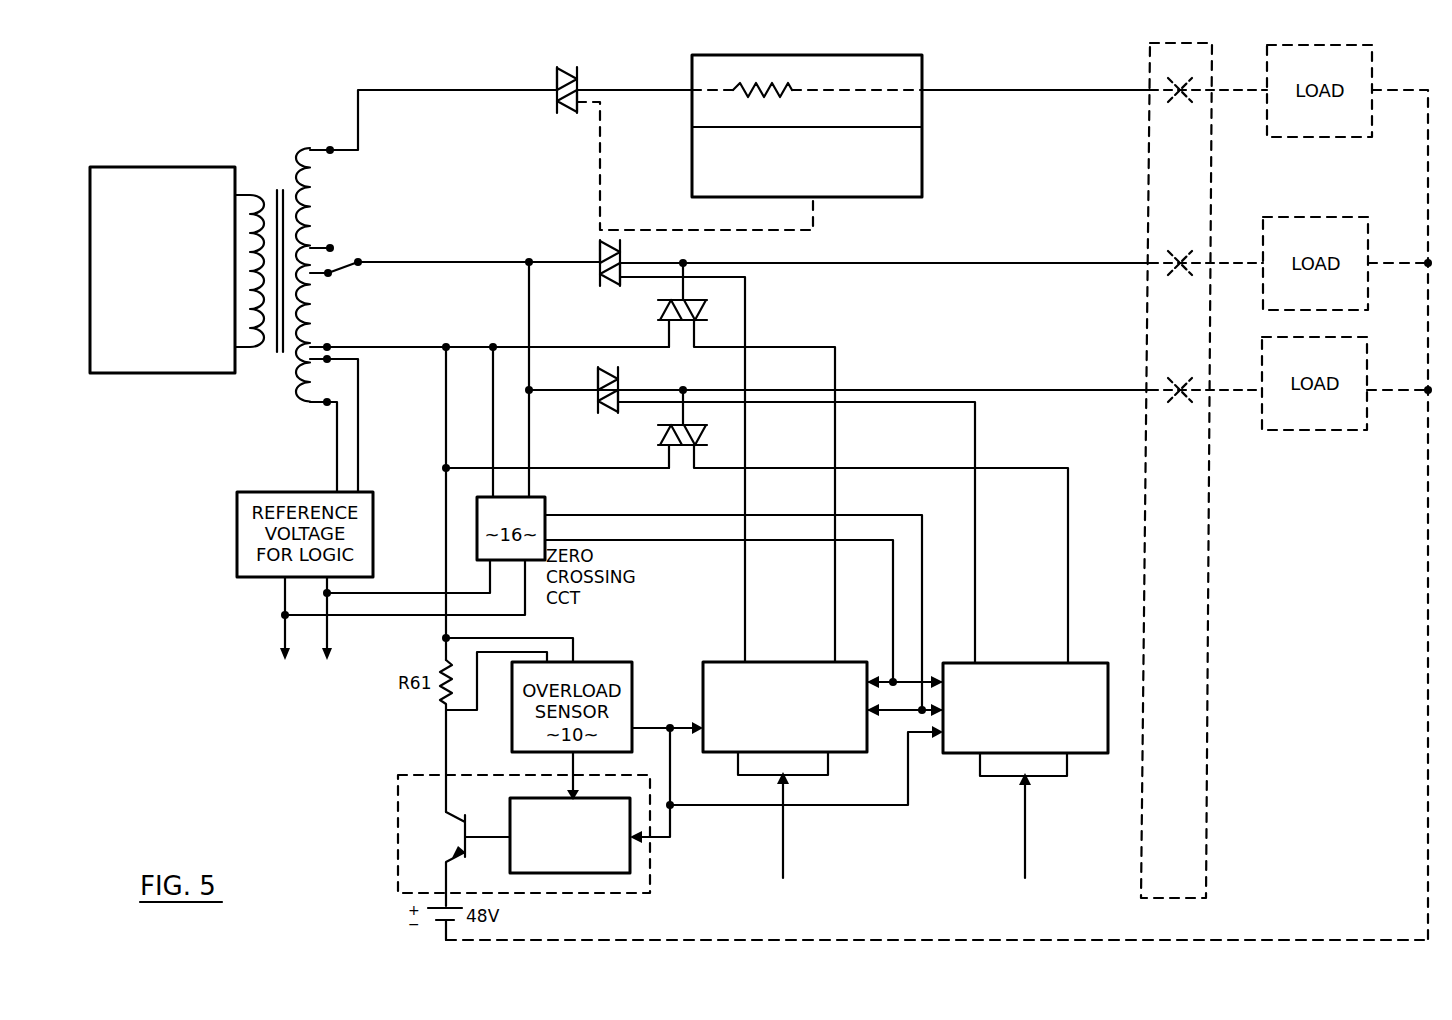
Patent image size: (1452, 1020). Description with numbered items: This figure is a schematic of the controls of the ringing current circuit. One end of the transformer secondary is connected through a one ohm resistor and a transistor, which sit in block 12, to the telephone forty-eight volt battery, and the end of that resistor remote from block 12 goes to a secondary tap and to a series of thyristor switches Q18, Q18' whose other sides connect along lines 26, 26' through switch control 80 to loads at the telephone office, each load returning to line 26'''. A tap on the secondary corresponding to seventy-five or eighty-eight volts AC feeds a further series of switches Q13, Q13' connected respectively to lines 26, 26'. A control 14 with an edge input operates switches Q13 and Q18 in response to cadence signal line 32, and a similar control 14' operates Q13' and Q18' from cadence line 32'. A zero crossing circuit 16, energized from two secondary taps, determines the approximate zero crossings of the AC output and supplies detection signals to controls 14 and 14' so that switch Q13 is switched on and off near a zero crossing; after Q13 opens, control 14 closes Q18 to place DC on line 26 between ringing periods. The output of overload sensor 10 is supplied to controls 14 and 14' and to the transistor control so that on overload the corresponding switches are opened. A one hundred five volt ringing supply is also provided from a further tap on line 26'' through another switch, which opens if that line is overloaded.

The overload sensor 10 is at (265, 188).
The block 12 is at (393, 845).
The control 14 is at (787, 727).
The control 14' is at (1029, 728).
The zero crossing circuit 16 is at (922, 171).
The line 26 is at (1153, 278).
The line 26' is at (1156, 375).
The line 26'' is at (1155, 115).
The line 26''' is at (1385, 515).
The line 32 is at (803, 825).
The line 32' is at (1051, 825).
The switch control 80 is at (1229, 470).
The switch Q13 is at (854, 451).
The switch Q18 is at (746, 462).
The switch Q13' is at (839, 515).
The switch Q18' is at (863, 526).